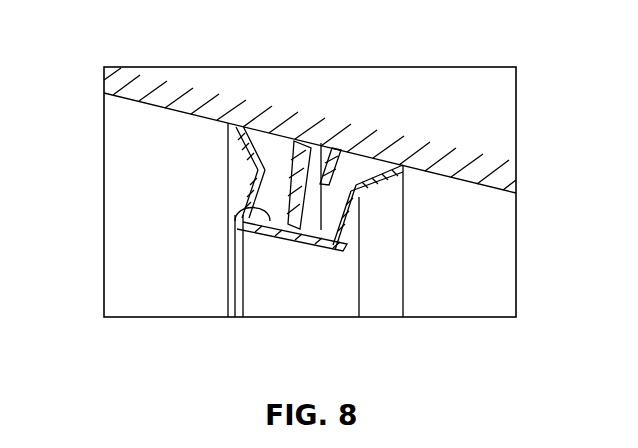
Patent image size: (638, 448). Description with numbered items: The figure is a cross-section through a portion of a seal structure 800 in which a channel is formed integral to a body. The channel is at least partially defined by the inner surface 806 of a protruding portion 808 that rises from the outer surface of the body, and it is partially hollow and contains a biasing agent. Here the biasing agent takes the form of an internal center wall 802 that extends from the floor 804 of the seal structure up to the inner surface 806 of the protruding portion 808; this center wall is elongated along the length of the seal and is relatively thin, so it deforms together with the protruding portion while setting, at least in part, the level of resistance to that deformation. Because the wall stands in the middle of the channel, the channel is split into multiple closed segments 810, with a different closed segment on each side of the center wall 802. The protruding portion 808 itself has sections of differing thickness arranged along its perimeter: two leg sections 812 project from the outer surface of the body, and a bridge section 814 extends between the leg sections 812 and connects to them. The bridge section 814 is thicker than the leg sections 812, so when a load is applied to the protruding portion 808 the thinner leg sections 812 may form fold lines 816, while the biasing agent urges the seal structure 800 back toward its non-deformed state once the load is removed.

The seal structure 800 is at (351, 149).
The internal center wall 802 is at (307, 172).
The floor 804 is at (347, 152).
The inner surface 806 is at (240, 207).
The protruding portion 808 is at (257, 252).
The closed segments 810 is at (267, 153).
The leg sections 812 is at (248, 148).
The bridge section 814 is at (310, 235).
The fold lines 816 is at (250, 170).